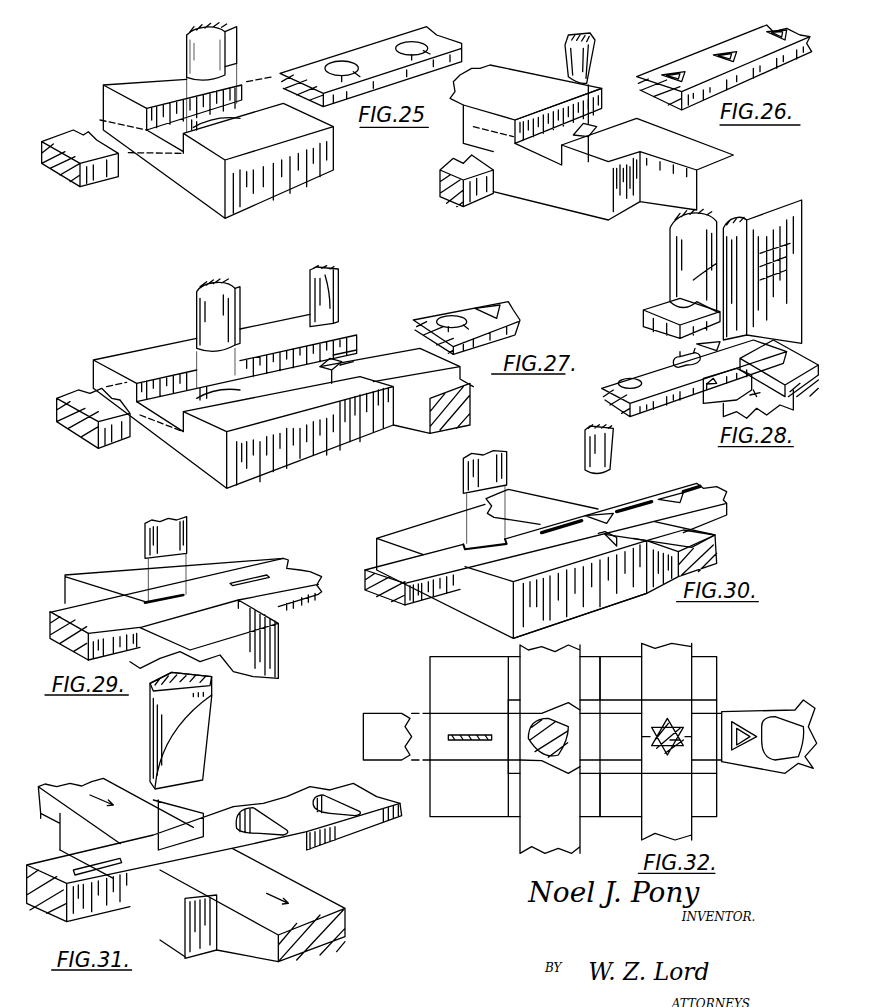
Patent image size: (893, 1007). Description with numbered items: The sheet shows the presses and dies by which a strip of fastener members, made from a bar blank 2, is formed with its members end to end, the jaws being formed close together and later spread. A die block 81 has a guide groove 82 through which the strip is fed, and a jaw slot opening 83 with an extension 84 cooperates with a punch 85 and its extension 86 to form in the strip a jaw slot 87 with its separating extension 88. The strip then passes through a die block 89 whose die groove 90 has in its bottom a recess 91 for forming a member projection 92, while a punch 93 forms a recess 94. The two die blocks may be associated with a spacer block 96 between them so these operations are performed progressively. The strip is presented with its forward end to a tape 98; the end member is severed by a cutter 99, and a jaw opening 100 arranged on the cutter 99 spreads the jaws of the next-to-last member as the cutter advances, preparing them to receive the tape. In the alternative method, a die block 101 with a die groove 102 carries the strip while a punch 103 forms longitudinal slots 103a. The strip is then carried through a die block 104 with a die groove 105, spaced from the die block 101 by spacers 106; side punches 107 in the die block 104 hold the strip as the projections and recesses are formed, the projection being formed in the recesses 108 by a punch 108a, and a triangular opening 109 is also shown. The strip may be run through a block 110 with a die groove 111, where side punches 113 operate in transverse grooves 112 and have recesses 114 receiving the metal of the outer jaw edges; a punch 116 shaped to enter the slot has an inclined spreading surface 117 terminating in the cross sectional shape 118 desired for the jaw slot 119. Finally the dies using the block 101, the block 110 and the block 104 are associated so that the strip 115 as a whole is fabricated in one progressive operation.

In FIG. 25, the bar blank 2 is at (80, 170).
In FIG. 26, the bar blank 2 is at (466, 191).
In FIG. 27, the bar blank 2 is at (93, 431).
In FIG. 29, the bar blank 2 is at (178, 611).
In FIG. 30, the bar blank 2 is at (385, 599).
In FIG. 32, the bar blank 2 is at (396, 721).
In FIG. 25, the die block 81 is at (216, 150).
In FIG. 27, the die block 81 is at (243, 403).
In FIG. 25, the guide groove 82 is at (194, 133).
In FIG. 27, the guide groove 82 is at (247, 393).
In FIG. 25, the jaw slot opening 83 is at (214, 133).
In FIG. 27, the jaw slot opening 83 is at (225, 401).
In FIG. 25, the extension 84 is at (233, 124).
In FIG. 27, the extension 84 is at (240, 391).
In FIG. 25, the punch 85 is at (196, 77).
In FIG. 27, the punch 85 is at (200, 333).
In FIG. 25, the punch extension 86 is at (246, 46).
In FIG. 27, the punch extension 86 is at (251, 313).
In FIG. 25, the jaw slot 87 is at (371, 67).
In FIG. 27, the jaw slot 87 is at (466, 314).
In FIG. 28, the jaw slot 87 is at (688, 378).
In FIG. 25, the separating extension 88 is at (397, 41).
In FIG. 27, the separating extension 88 is at (475, 302).
In FIG. 28, the separating extension 88 is at (660, 360).
In FIG. 26, the die block 89 is at (591, 153).
In FIG. 27, the die block 89 is at (396, 411).
In FIG. 26, the die groove 90 is at (534, 115).
In FIG. 27, the die groove 90 is at (360, 335).
In FIG. 26, the recess 91 is at (582, 131).
In FIG. 27, the recess 91 is at (319, 382).
In FIG. 26, the member projection 92 is at (724, 73).
In FIG. 26, the punch 93 is at (600, 58).
In FIG. 27, the punch 93 is at (341, 296).
In FIG. 26, the recess 94 is at (690, 52).
In FIG. 27, the recess 94 is at (506, 300).
In FIG. 28, the recess 94 is at (708, 363).
In FIG. 27, the spacer block 96 is at (354, 439).
In FIG. 28, the tape 98 is at (763, 259).
In FIG. 28, the cutter 99 is at (669, 318).
In FIG. 28, the jaw opening 100 is at (668, 260).
In FIG. 29, the die block 101 is at (223, 639).
In FIG. 30, the die block 101 is at (410, 605).
In FIG. 32, the die block 101 is at (466, 748).
In FIG. 29, the die groove 102 is at (174, 600).
In FIG. 30, the die groove 102 is at (546, 544).
In FIG. 32, the die groove 102 is at (576, 751).
In FIG. 29, the punch 103 is at (188, 559).
In FIG. 30, the punch 103 is at (505, 497).
In FIG. 32, the punch 103 is at (472, 726).
In FIG. 29, the longitudinal slot 103a is at (140, 586).
In FIG. 30, the longitudinal slot 103a is at (464, 539).
In FIG. 30, the die block 104 is at (669, 575).
In FIG. 32, the die block 104 is at (612, 773).
In FIG. 30, the die groove 105 is at (598, 544).
In FIG. 30, the spacer 106 is at (579, 615).
In FIG. 30, the side punch 107 is at (621, 508).
In FIG. 32, the recess 108 is at (704, 741).
In FIG. 30, the punch 108a is at (627, 449).
In FIG. 32, the punch 108a is at (726, 790).
In FIG. 30, the triangular opening 109 is at (621, 502).
In FIG. 32, the triangular opening 109 is at (753, 714).
In FIG. 31, the block 110 is at (191, 881).
In FIG. 32, the block 110 is at (597, 750).
In FIG. 31, the die groove 111 is at (215, 928).
In FIG. 31, the transverse groove 112 is at (101, 881).
In FIG. 32, the transverse groove 112 is at (555, 724).
In FIG. 31, the side punch 113 is at (225, 833).
In FIG. 32, the side punch 113 is at (505, 660).
In FIG. 31, the recess 114 is at (213, 861).
In FIG. 32, the recess 114 is at (550, 741).
In FIG. 31, the strip 115 is at (317, 816).
In FIG. 32, the strip 115 is at (769, 754).
In FIG. 31, the punch 116 is at (200, 730).
In FIG. 31, the inclined spreading surface 117 is at (203, 741).
In FIG. 31, the cross sectional shape 118 is at (204, 688).
In FIG. 32, the cross sectional shape 118 is at (565, 737).
In FIG. 31, the jaw slot 119 is at (298, 801).
In FIG. 32, the jaw slot 119 is at (779, 726).